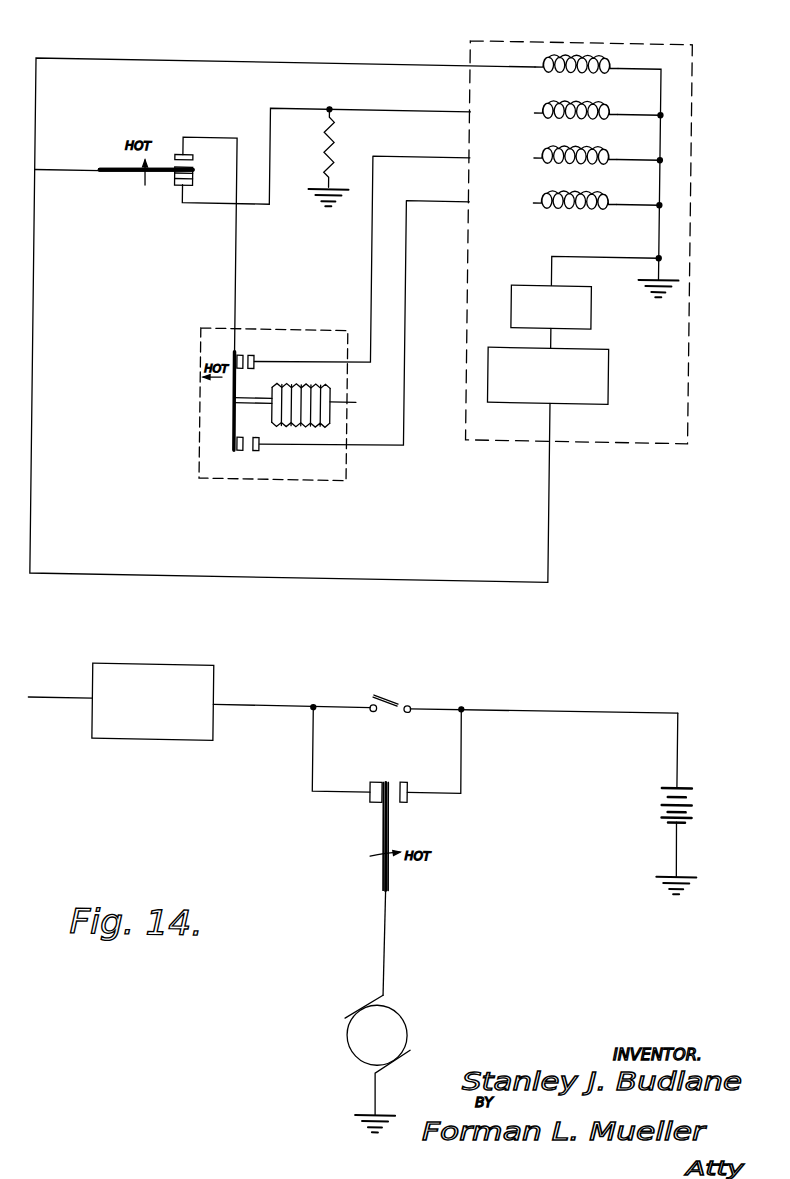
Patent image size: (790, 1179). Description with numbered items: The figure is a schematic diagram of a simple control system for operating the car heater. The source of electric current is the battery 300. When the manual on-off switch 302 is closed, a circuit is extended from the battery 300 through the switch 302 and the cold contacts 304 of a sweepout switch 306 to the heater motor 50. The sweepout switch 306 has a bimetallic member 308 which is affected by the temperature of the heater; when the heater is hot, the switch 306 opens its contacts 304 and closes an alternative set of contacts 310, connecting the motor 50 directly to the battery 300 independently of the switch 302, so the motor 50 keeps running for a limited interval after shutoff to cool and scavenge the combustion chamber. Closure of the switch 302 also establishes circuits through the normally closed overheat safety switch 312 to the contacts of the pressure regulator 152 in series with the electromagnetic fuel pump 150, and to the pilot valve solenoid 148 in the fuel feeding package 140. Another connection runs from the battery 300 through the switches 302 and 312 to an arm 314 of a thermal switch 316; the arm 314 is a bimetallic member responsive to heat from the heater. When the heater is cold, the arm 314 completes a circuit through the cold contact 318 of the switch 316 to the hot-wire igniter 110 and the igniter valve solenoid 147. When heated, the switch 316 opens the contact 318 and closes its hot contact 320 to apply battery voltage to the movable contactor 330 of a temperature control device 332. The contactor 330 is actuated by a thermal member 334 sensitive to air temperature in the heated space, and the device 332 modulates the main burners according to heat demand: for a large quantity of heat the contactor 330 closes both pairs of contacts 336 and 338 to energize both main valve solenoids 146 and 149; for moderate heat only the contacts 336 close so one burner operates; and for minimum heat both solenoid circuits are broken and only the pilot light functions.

The thermal switch 316 is at (113, 151).
The arm 314 is at (123, 176).
The cold contact 318 is at (178, 186).
The hot contact 320 is at (178, 150).
The hot-wire igniter 110 is at (336, 132).
The fuel feeding package 140 is at (692, 84).
The pilot valve solenoid 148 is at (598, 50).
The igniter valve solenoid 147 is at (576, 95).
The main valve solenoid 146 is at (576, 140).
The main valve solenoid 149 is at (567, 186).
The electromagnetic fuel pump 150 is at (533, 276).
The pressure regulator 152 is at (612, 365).
The temperature control device 332 is at (204, 418).
The movable contactor 330 is at (238, 421).
The contacts 336 is at (256, 351).
The thermal member 334 is at (313, 406).
The contacts 338 is at (245, 448).
The overheat safety switch 312 is at (101, 739).
The manual on-off switch 302 is at (405, 690).
The cold contacts 304 is at (384, 776).
The contacts 310 is at (401, 776).
The sweepout switch 306 is at (369, 839).
The bimetallic member 308 is at (393, 864).
The heater motor 50 is at (416, 1015).
The battery 300 is at (672, 786).